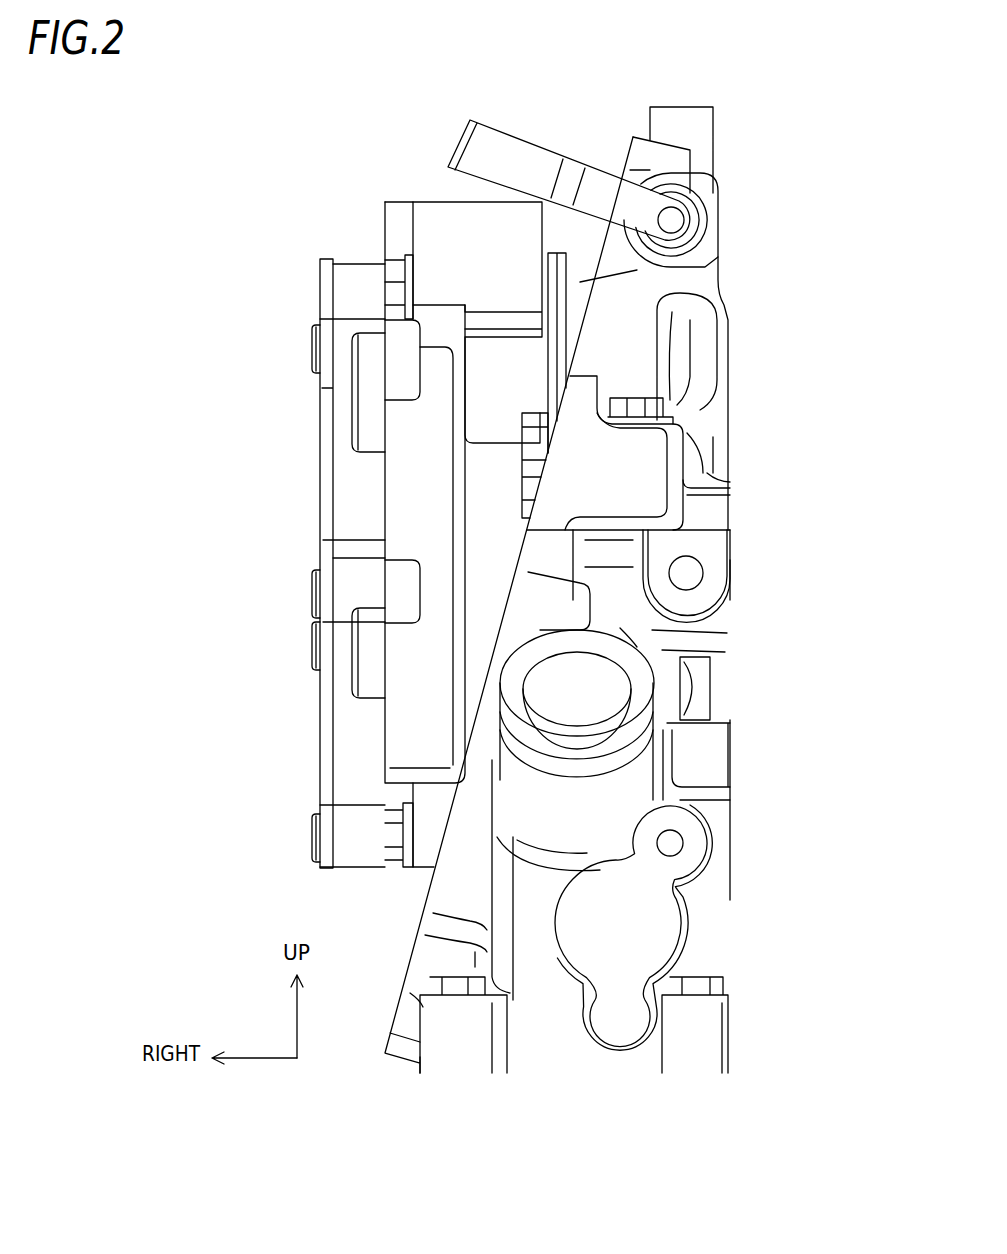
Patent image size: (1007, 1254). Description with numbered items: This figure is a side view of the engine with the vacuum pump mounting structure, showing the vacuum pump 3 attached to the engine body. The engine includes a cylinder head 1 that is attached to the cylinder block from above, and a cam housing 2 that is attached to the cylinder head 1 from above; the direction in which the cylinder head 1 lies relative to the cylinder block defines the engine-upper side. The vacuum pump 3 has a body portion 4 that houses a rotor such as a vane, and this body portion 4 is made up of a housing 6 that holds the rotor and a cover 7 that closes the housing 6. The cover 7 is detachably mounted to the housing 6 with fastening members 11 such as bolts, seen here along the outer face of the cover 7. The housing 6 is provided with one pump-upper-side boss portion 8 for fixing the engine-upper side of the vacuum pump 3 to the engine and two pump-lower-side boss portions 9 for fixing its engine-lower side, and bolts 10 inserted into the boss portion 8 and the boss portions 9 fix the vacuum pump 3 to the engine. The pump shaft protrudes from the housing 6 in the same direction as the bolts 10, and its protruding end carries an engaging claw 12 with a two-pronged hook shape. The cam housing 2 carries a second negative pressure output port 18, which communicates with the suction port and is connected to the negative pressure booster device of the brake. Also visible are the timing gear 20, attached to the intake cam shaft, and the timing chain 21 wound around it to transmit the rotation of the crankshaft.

The cylinder head 1 is at (733, 672).
The cam housing 2 is at (712, 450).
The vacuum pump 3 is at (377, 179).
The body portion 4 is at (372, 230).
The housing 6 is at (402, 208).
The cover 7 is at (323, 486).
The pump-upper-side boss portion 8 is at (437, 202).
The pump-lower-side boss portion 9 is at (425, 868).
The bolt 10 is at (390, 267).
The fastening member 11 is at (312, 348).
The engaging claw 12 is at (526, 418).
The second negative pressure output port 18 is at (517, 135).
The timing gear 20 is at (548, 358).
The timing chain 21 is at (703, 270).